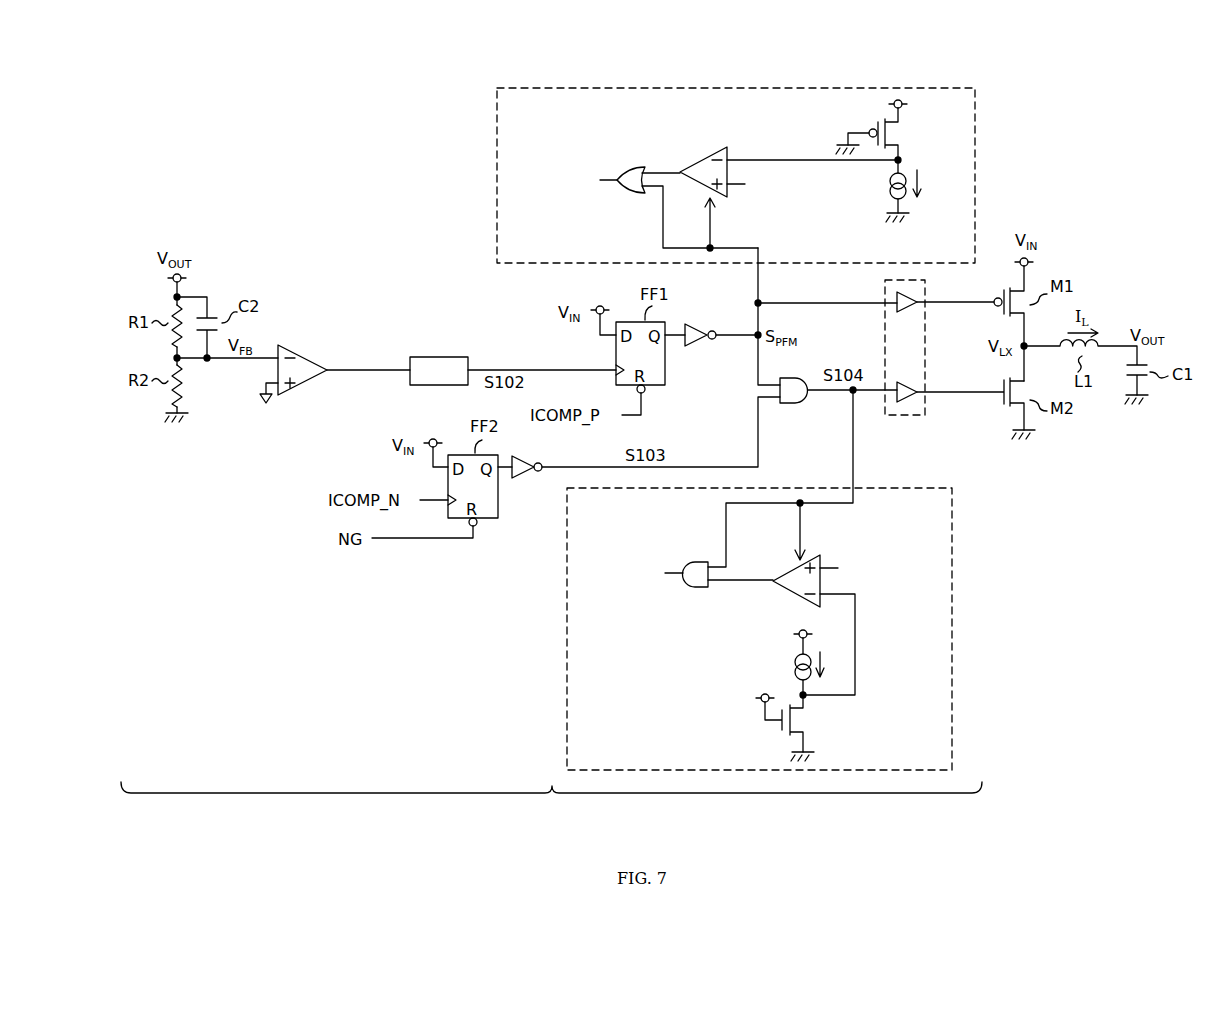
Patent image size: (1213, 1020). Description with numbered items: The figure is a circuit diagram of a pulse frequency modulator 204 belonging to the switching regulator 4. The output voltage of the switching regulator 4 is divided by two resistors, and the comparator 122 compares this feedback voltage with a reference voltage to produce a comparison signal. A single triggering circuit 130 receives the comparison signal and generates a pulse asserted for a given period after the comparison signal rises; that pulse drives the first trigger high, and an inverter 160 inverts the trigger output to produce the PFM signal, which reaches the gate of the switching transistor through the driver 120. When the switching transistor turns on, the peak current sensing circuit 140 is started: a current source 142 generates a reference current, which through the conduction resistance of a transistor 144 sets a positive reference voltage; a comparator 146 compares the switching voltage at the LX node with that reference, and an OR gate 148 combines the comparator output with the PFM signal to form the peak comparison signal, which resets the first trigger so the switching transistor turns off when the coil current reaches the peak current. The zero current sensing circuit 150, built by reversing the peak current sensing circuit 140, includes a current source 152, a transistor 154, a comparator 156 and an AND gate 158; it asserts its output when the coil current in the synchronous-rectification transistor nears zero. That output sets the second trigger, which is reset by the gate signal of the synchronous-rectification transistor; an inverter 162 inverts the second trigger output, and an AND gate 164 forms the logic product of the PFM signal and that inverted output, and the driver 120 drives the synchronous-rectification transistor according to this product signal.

The switching regulator 4 is at (1176, 113).
The driver 120 is at (907, 417).
The comparator 122 is at (306, 397).
The single triggering circuit 130 is at (440, 356).
The peak current sensing circuit 140 is at (977, 162).
The current source 142 is at (882, 187).
The transistor 144 is at (903, 134).
The comparator 146 is at (700, 145).
The OR gate 148 is at (628, 196).
The zero current sensing circuit 150 is at (955, 662).
The current source 152 is at (791, 668).
The transistor 154 is at (812, 723).
The comparator 156 is at (771, 590).
The AND gate 158 is at (700, 588).
The inverter 160 is at (702, 347).
The inverter 162 is at (524, 480).
The AND gate 164 is at (799, 404).
The pulse frequency modulator 204 is at (551, 804).